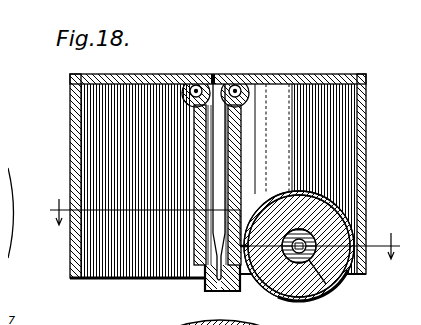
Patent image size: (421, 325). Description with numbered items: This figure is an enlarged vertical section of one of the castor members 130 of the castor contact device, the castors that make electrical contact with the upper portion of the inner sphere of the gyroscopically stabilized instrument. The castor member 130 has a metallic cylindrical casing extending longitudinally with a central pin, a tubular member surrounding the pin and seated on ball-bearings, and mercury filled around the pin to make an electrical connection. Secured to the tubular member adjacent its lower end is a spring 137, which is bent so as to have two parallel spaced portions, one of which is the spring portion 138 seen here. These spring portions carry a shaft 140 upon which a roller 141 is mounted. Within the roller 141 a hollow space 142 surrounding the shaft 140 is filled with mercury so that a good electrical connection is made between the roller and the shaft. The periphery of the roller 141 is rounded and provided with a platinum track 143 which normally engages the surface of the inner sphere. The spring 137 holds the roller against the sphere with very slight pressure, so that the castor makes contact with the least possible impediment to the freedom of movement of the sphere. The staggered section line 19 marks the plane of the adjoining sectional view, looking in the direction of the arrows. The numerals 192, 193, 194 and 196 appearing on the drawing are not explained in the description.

The castor member 130 is at (34, 150).
The spring 137 is at (192, 255).
The spring portion 138 is at (213, 67).
The shaft 140 is at (325, 278).
The roller 141 is at (298, 292).
The hollow space 142 is at (287, 222).
The platinum track 143 is at (254, 274).
The housing top wall 192 is at (300, 67).
The slot 193 is at (219, 182).
The nozzle mouth 194 is at (200, 284).
The nozzle right half 196 is at (230, 67).
The section line 19— 19 is at (224, 229).